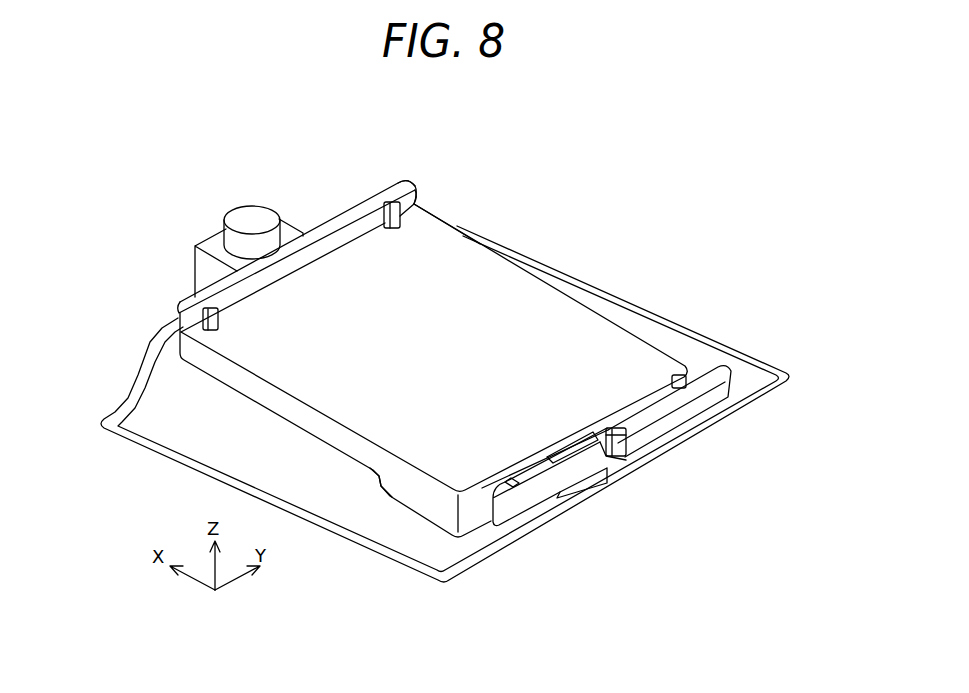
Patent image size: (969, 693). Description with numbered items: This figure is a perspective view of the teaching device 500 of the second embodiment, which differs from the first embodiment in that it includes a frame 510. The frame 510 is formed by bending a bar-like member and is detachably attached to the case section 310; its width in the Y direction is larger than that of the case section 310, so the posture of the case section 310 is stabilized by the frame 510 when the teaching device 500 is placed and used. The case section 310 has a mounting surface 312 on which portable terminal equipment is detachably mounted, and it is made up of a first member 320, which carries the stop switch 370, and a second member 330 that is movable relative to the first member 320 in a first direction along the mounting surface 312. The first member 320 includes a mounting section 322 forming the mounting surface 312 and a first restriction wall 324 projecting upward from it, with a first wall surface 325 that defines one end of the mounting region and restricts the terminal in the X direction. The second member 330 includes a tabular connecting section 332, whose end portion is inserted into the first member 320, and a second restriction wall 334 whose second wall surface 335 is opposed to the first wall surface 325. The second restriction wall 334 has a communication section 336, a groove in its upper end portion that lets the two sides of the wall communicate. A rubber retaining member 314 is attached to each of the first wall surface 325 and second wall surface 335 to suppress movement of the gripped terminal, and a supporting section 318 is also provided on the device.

The teaching device 500 is at (232, 157).
The frame 510 is at (336, 535).
The case section 310 is at (597, 123).
The mounting surface 312 is at (462, 293).
The retaining member 314 is at (385, 243).
The supporting section 318 is at (383, 490).
The first member 320 is at (607, 217).
The mounting section 322 is at (477, 233).
The first restriction wall 324 is at (414, 188).
The first wall surface 325 is at (416, 203).
The second member 330 is at (614, 383).
The connecting section 332 is at (592, 430).
The second restriction wall 334 is at (697, 376).
The second wall surface 335 is at (625, 435).
The communication section 336 is at (614, 452).
The stop switch 370 is at (259, 219).